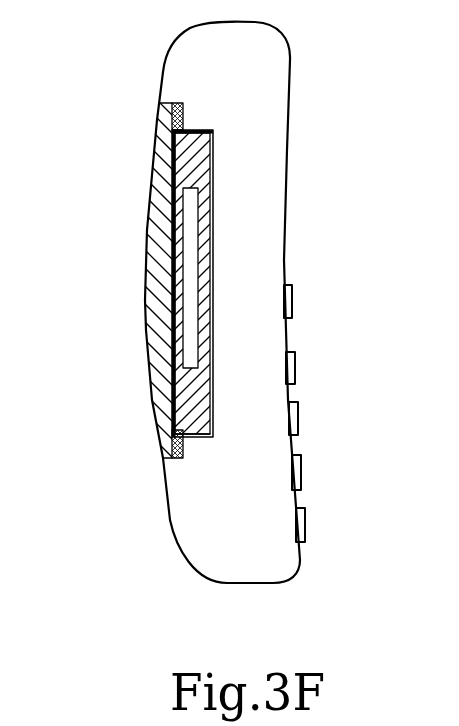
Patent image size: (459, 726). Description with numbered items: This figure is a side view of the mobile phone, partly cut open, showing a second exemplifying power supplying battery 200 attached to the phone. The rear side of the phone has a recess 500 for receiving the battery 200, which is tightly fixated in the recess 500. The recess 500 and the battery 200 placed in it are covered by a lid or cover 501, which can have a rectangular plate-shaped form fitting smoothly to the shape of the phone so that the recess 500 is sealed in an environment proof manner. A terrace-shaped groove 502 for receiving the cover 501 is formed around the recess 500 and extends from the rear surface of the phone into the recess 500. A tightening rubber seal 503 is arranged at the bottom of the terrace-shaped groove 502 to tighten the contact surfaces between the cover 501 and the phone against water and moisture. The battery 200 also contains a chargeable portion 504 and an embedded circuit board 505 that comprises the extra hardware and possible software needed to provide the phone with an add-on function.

The battery 200 is at (188, 158).
The recess 500 is at (200, 308).
The cover 501 is at (155, 285).
The terrace-shaped groove 502 is at (170, 103).
The rubber seal 503 is at (183, 449).
The chargeable portion 504 is at (188, 412).
The embedded circuit board 505 is at (190, 279).